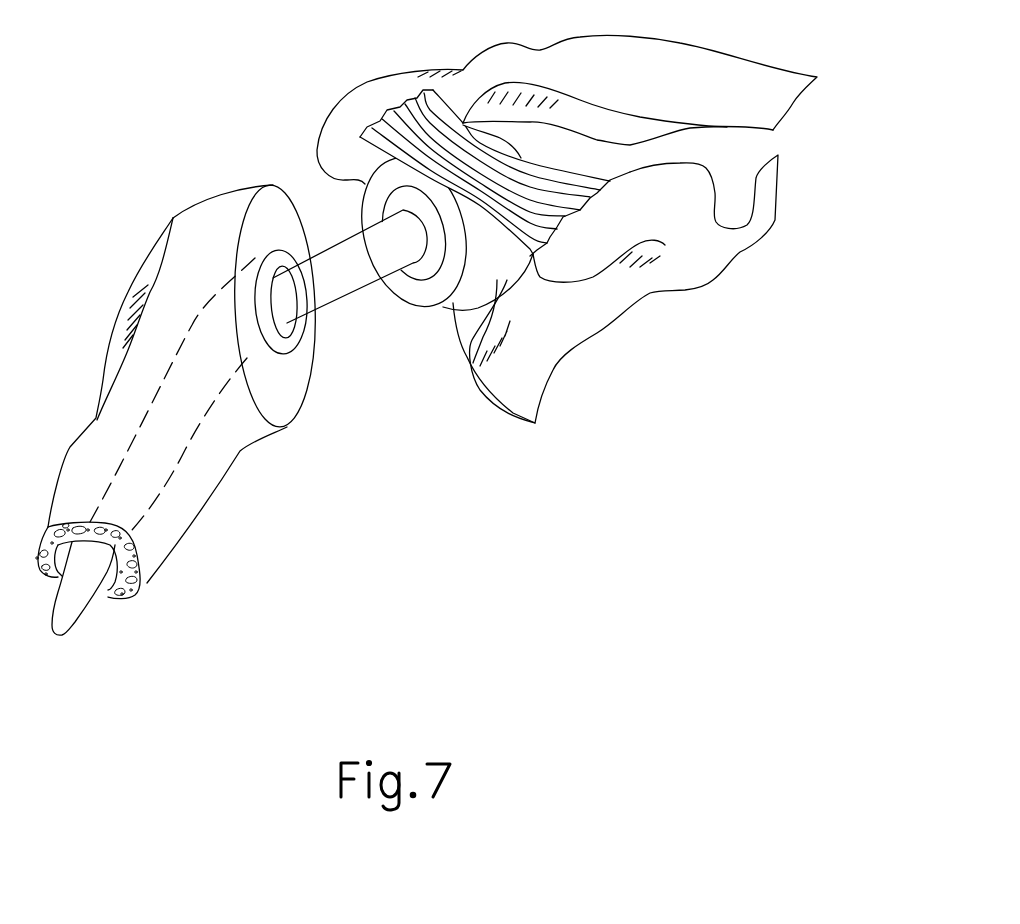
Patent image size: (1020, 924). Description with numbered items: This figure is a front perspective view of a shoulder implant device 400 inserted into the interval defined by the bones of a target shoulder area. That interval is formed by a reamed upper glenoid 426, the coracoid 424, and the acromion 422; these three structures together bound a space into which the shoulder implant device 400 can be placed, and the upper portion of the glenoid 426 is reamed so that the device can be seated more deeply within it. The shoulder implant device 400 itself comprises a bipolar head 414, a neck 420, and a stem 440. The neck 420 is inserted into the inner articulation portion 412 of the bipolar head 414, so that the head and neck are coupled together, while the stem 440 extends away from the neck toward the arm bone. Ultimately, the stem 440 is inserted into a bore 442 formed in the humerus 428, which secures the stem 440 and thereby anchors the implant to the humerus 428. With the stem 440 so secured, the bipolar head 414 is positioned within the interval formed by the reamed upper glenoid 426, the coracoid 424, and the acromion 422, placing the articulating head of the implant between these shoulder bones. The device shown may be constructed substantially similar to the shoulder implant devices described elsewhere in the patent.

The shoulder implant device 400 is at (284, 398).
The inner articulation portion 412 is at (393, 204).
The bipolar head 414 is at (440, 293).
The neck 420 is at (330, 292).
The acromion 422 is at (358, 107).
The coracoid 424 is at (580, 267).
The reamed upper glenoid 426 is at (470, 343).
The humerus 428 is at (205, 217).
The stem 440 is at (78, 602).
The bore 442 is at (287, 337).